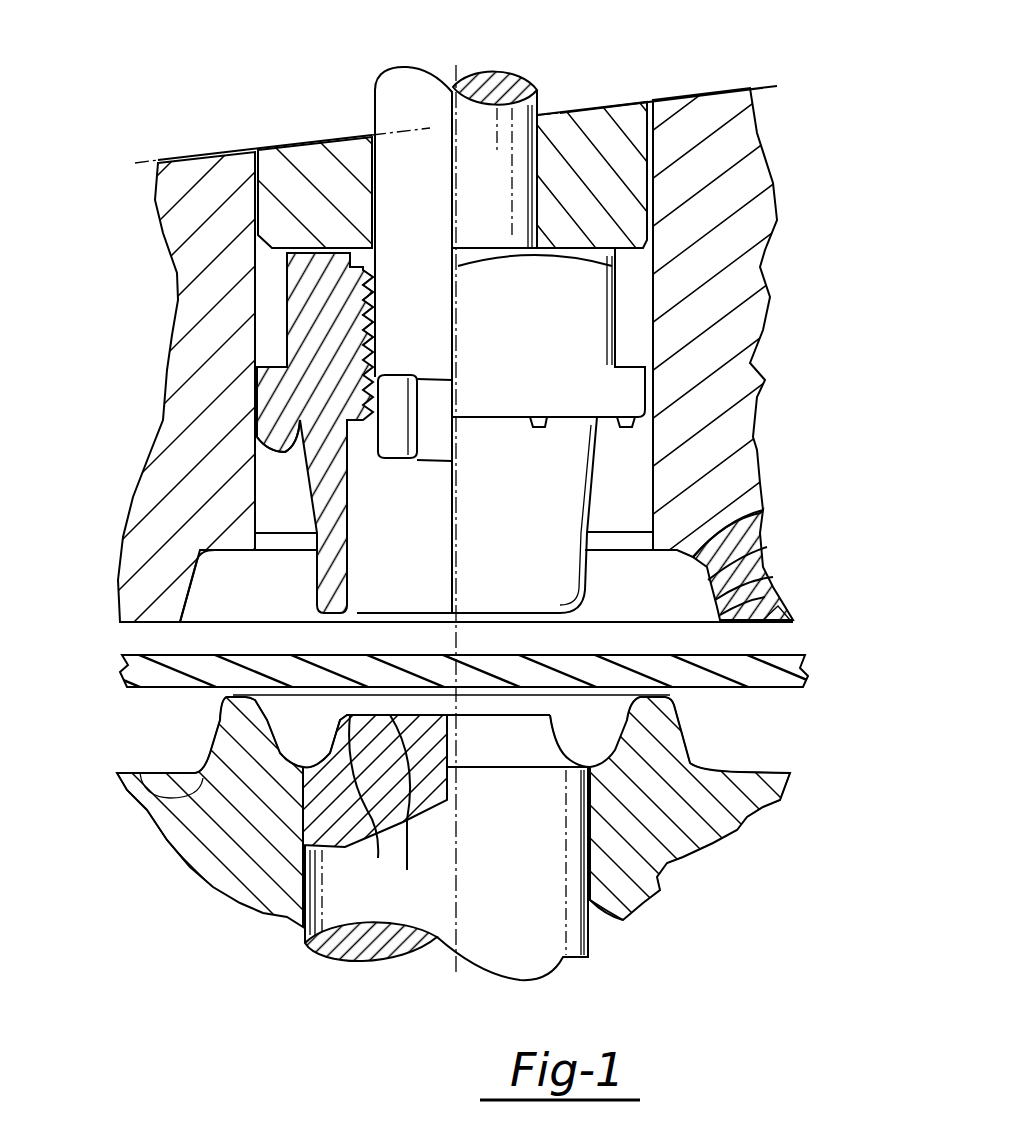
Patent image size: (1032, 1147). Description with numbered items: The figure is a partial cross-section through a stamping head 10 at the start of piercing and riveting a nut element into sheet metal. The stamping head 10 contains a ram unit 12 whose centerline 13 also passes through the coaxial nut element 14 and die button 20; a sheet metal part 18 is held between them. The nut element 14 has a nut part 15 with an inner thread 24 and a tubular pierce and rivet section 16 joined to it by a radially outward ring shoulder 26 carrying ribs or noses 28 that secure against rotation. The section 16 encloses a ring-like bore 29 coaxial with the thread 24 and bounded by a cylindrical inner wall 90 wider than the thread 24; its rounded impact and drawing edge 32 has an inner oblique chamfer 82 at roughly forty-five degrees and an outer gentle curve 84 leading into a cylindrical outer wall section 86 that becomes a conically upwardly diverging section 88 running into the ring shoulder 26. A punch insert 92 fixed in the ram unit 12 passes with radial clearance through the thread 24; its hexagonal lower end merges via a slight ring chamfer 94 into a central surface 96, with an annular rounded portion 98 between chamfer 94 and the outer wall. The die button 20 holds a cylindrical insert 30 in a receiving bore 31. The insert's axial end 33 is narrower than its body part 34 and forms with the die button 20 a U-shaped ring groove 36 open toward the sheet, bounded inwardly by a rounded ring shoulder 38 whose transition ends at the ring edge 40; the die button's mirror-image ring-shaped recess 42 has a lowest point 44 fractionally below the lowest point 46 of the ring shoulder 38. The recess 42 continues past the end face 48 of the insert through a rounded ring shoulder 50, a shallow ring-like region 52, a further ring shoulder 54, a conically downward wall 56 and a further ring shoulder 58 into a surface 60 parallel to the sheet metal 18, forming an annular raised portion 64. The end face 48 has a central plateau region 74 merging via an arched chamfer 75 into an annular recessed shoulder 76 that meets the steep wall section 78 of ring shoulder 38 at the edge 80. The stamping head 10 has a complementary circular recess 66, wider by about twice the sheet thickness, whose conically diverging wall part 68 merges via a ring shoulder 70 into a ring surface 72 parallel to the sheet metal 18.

The stamping head 10 is at (765, 384).
The ram unit 12 is at (582, 106).
The centerline 13 is at (478, 72).
The nut element 14 is at (618, 283).
The nut part 15 is at (256, 330).
The pierce and rivet section 16 is at (712, 552).
The sheet metal part 18 is at (783, 688).
The die button 20 is at (667, 887).
The inner thread 24 is at (360, 300).
The ring shoulder 26 is at (271, 481).
The ribs or noses 28 is at (268, 430).
The hollow cavity or bore 29 is at (418, 570).
The cylindrical insert 30 is at (557, 957).
The receiving bore 31 is at (628, 921).
The rounded impact and drawing edge 32 is at (352, 588).
The axial end 33 is at (580, 735).
The body part 34 is at (333, 915).
The U-shaped ring groove 36 is at (600, 745).
The rounded ring shoulder 38 is at (550, 768).
The ring edge 40 is at (483, 768).
The ring-shaped recess 42 is at (700, 768).
The lowest point 44 is at (713, 845).
The lowest point 46 is at (584, 771).
The end face 48 is at (467, 717).
The rounded ring shoulder 50 is at (206, 755).
The shallow ring-like region 52 is at (218, 736).
The rounded ring shoulder 54 is at (228, 700).
The wall 56 is at (198, 773).
The ring shoulder 58 is at (160, 820).
The surface 60 is at (755, 788).
The annular raised portion 64 is at (657, 710).
The circular recess 66 is at (722, 558).
The conically extending wall part 68 is at (737, 574).
The skirt surface 70 is at (760, 600).
The ring surface 72 is at (763, 624).
The plateau region 74 is at (400, 799).
The chamfer 75 is at (375, 783).
The annular recessed shoulder 76 is at (358, 800).
The steep wall section 78 is at (340, 732).
The edge 80 is at (342, 717).
The oblique chamfer 82 is at (405, 612).
The gentle curve 84 is at (320, 607).
The cylindrical outer wall section 86 is at (588, 532).
The conically upwardly diverging section 88 is at (298, 488).
The cylindrical inner wall 90 is at (350, 493).
The punch insert 92 is at (394, 66).
The ring chamfer 94 is at (416, 447).
The central surface 96 is at (399, 508).
The annular rounded portion 98 is at (387, 447).